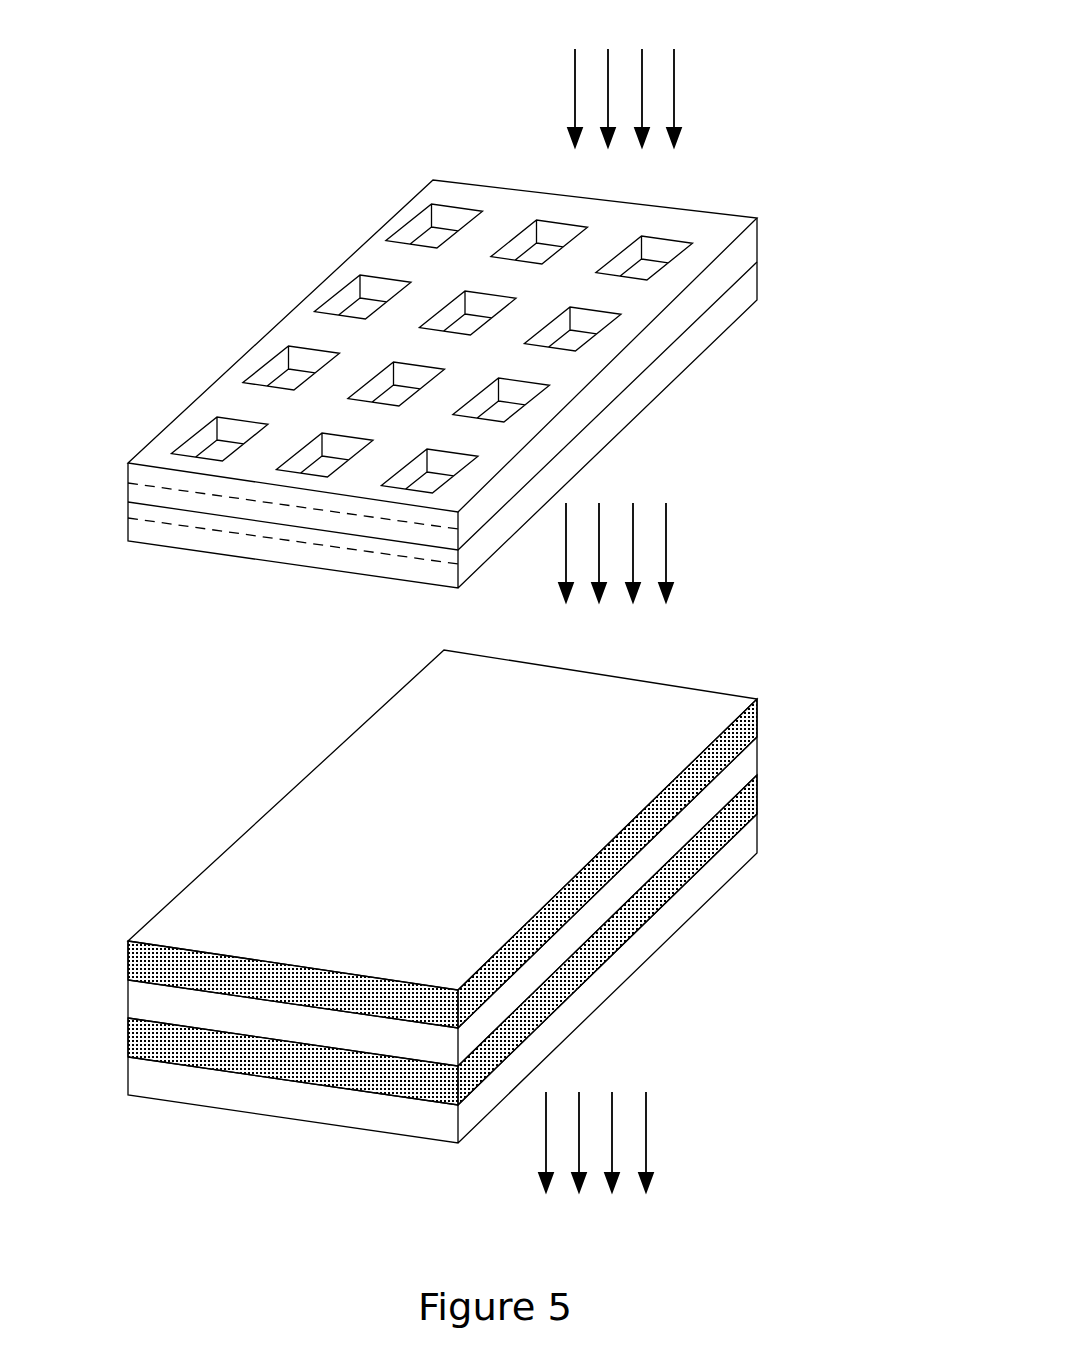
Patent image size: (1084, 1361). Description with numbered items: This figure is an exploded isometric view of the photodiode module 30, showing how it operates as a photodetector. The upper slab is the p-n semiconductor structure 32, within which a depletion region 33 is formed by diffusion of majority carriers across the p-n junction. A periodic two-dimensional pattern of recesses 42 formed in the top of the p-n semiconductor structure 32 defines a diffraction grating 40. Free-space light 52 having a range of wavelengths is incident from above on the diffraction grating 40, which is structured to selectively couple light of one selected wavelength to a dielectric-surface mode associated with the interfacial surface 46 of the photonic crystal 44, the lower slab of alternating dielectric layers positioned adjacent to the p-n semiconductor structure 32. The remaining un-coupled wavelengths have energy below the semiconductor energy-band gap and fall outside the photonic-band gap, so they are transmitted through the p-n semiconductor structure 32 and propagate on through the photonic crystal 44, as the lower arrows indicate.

The photodiode module 30 is at (808, 197).
The p-n semiconductor structure 32 is at (110, 465).
The depletion region 33 is at (462, 532).
The diffraction grating 40 is at (297, 282).
The recesses 42 is at (438, 221).
The photonic crystal 44 is at (93, 943).
The interfacial surface 46 is at (392, 826).
The free-space light 52 is at (690, 48).